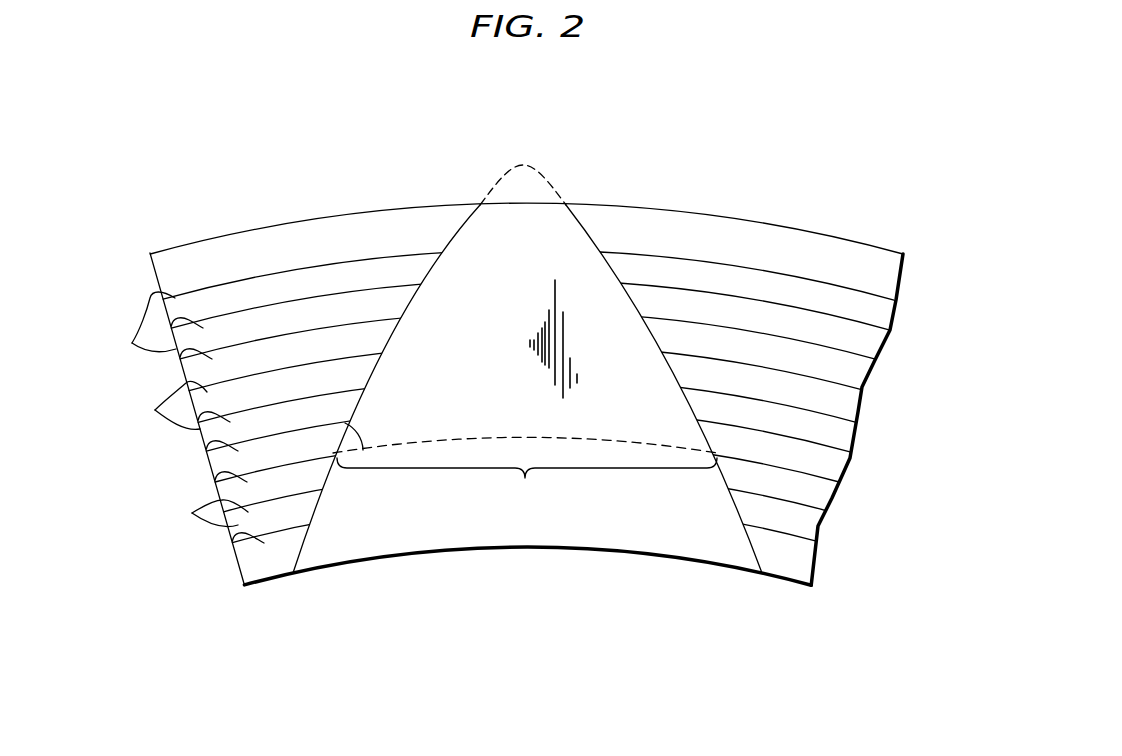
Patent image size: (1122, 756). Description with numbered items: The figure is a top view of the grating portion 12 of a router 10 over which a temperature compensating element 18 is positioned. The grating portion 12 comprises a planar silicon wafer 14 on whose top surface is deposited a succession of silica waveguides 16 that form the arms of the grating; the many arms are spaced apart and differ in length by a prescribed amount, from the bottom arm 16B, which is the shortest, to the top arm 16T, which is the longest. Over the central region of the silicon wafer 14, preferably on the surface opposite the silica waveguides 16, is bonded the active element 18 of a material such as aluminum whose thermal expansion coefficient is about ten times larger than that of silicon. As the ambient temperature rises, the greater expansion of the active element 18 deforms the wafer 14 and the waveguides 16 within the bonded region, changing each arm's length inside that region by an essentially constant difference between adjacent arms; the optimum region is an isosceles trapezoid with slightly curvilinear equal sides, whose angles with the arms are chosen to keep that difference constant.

The router 10 is at (424, 528).
The grating portion 12 is at (905, 177).
The planar silicon wafer 14 is at (773, 581).
The silica waveguides 16 is at (175, 412).
The top arm 16T is at (815, 281).
The bottom arm 16B is at (792, 535).
The temperature compensating element 18 is at (570, 228).